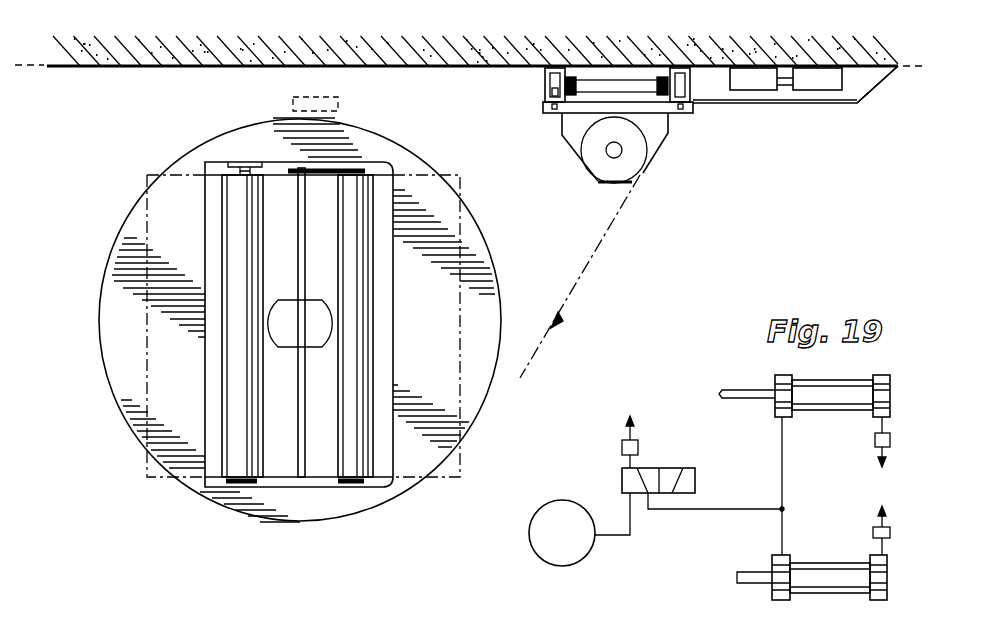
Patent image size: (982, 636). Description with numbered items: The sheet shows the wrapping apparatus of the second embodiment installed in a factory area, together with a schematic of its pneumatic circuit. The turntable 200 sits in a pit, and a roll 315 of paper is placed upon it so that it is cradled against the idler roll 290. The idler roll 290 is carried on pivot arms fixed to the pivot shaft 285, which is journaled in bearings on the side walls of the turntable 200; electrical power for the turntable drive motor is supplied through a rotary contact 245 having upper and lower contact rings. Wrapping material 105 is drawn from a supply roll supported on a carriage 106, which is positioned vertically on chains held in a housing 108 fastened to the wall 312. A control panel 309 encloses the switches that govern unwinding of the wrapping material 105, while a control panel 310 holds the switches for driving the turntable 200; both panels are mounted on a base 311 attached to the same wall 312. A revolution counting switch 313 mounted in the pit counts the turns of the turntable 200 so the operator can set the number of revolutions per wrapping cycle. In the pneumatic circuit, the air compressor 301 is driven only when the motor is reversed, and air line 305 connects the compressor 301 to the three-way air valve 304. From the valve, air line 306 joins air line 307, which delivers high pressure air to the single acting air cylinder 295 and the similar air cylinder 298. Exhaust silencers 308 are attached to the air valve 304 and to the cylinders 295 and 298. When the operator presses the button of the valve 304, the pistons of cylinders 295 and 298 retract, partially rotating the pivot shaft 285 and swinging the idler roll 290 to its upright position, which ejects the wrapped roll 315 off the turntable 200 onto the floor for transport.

In FIG. 17, the wrapping material 105 is at (586, 268).
In FIG. 17, the carriage 106 is at (657, 153).
In FIG. 17, the housing 108 is at (688, 113).
In FIG. 17, the turntable 200 is at (496, 273).
In FIG. 17, the rotary contact 245 is at (240, 233).
In FIG. 17, the pivot shaft 285 is at (305, 221).
In FIG. 17, the idler roll 290 is at (353, 268).
In FIG. 19, the air cylinder 295 is at (816, 412).
In FIG. 19, the air cylinder 298 is at (853, 566).
In FIG. 19, the air compressor 301 is at (565, 566).
In FIG. 19, the three-way air valve 304 is at (675, 468).
In FIG. 19, the air line 305 is at (617, 537).
In FIG. 19, the air line 306 is at (713, 509).
In FIG. 19, the air line 307 is at (782, 480).
In FIG. 19, the exhaust silencer 308 is at (622, 447).
In FIG. 17, the control panel 309 is at (743, 90).
In FIG. 17, the control panel 310 is at (805, 90).
In FIG. 17, the base 311 is at (848, 104).
In FIG. 17, the wall 312 is at (442, 68).
In FIG. 17, the revolution counting switch 313 is at (340, 104).
In FIG. 17, the roll 315 is at (460, 190).